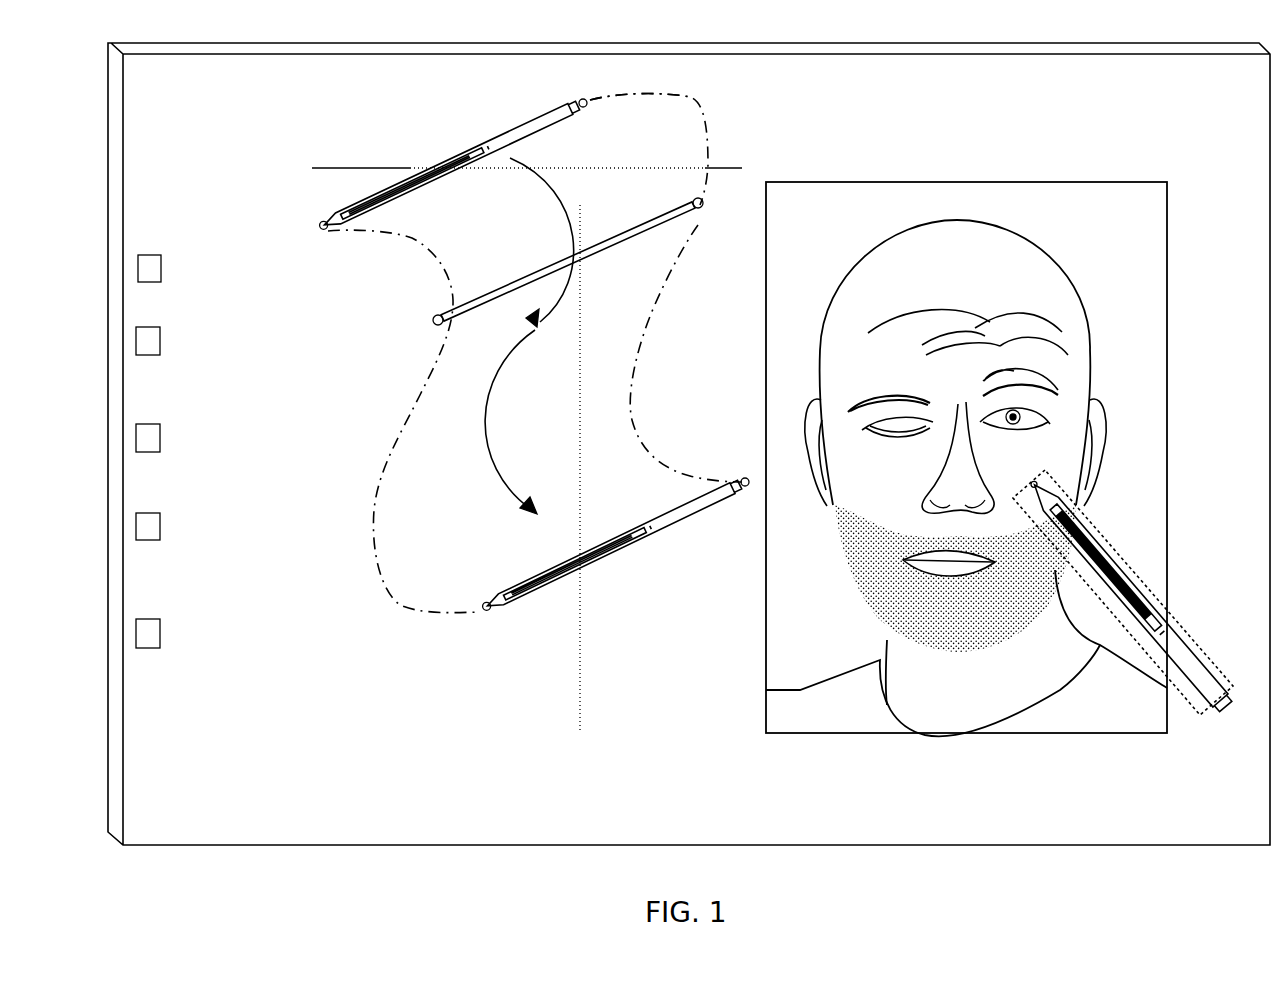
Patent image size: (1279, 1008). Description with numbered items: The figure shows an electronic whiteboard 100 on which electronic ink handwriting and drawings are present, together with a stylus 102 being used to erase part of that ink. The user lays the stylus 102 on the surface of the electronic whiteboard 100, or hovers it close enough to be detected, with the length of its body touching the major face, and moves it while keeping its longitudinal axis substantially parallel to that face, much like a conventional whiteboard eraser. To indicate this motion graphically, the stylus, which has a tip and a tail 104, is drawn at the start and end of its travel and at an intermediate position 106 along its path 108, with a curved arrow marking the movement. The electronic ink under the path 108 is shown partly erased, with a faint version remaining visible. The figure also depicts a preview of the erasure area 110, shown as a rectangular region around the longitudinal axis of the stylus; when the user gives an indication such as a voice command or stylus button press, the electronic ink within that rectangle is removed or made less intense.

The electronic whiteboard 100 is at (108, 247).
The stylus 102 is at (638, 540).
The tail of the stylus 104 is at (580, 99).
The intermediate position of the stylus 106 is at (688, 214).
The path of the stylus 108 is at (668, 99).
The erasure area 110 is at (1180, 622).